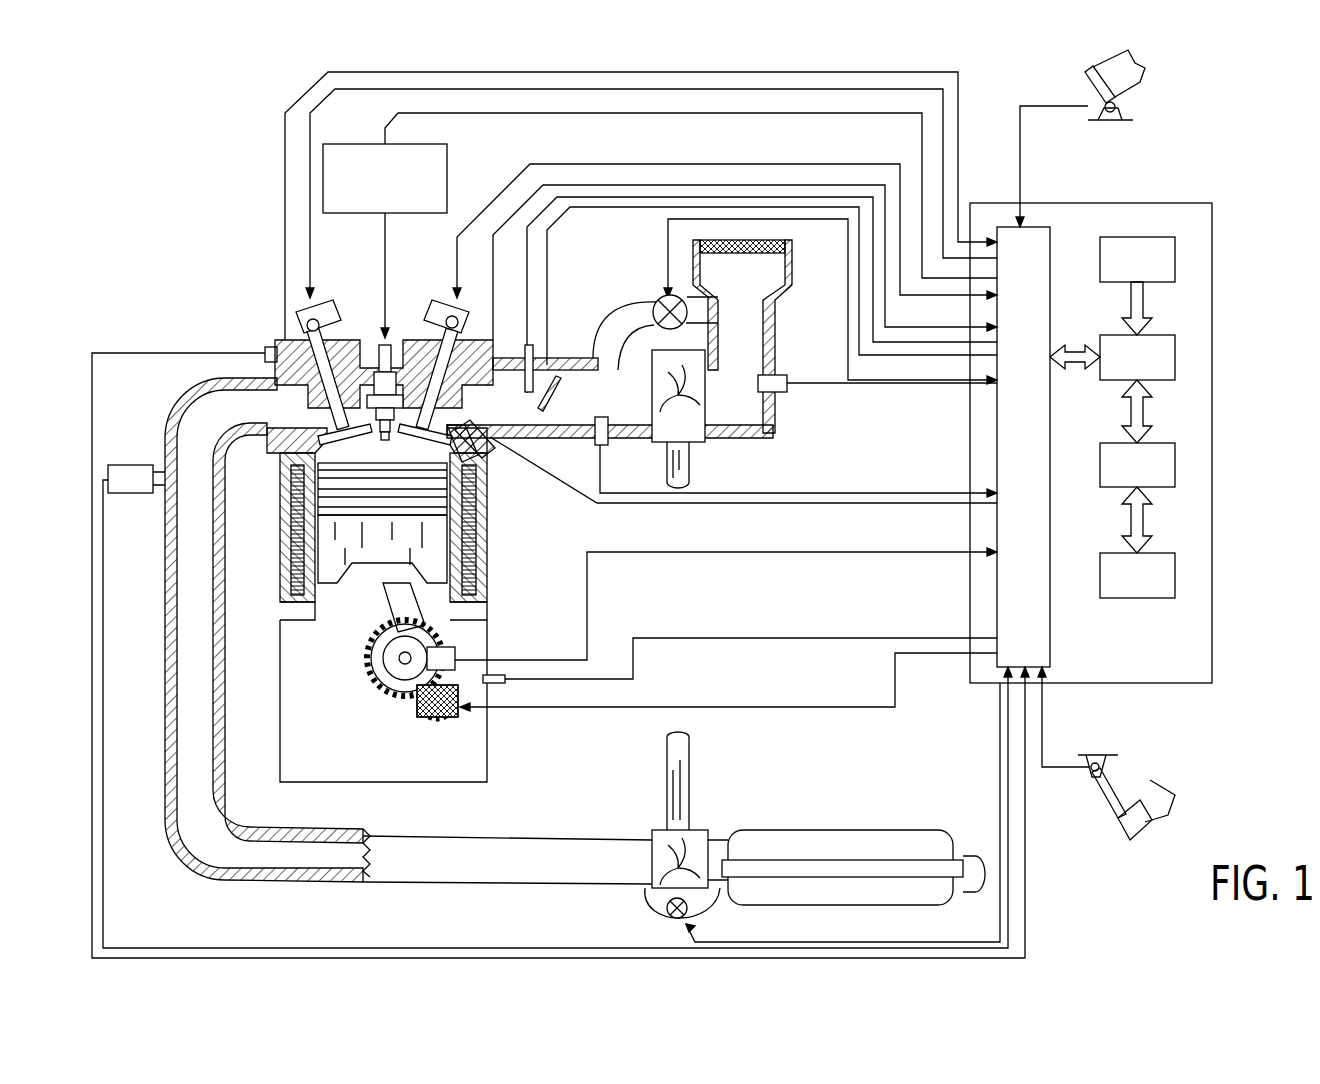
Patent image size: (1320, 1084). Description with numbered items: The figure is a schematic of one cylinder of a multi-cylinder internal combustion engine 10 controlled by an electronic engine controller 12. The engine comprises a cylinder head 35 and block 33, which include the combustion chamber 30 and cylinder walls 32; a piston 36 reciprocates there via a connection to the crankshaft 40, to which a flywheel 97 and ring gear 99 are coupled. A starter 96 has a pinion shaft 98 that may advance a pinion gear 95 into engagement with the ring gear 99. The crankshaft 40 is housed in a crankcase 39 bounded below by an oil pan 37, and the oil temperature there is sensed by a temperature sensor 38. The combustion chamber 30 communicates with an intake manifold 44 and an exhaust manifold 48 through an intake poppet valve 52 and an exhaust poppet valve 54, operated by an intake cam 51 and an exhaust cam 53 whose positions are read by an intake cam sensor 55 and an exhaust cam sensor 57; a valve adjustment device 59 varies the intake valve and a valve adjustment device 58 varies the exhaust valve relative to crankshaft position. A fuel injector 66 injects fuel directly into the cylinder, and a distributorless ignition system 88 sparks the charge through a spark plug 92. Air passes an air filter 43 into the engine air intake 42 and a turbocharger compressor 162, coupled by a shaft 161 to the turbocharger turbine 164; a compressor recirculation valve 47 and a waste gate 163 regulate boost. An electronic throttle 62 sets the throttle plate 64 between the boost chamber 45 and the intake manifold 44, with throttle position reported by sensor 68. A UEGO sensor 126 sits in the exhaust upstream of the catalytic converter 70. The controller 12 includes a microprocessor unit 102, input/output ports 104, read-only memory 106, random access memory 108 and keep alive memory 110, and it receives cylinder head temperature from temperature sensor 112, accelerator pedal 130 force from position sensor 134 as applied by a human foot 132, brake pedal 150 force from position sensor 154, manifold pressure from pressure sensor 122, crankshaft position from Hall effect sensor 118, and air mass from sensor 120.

The internal combustion engine 10 is at (213, 295).
The electronic engine controller 12 is at (1212, 200).
The combustion chamber 30 is at (382, 445).
The cylinder walls 32 is at (325, 595).
The block 33 is at (274, 494).
The cylinder head 35 is at (272, 338).
The piston 36 is at (365, 548).
The oil pan 37 is at (487, 762).
The temperature sensor 38 is at (498, 680).
The crankcase 39 is at (295, 703).
The crankshaft 40 is at (395, 685).
The engine air intake 42 is at (608, 266).
The air filter 43 is at (750, 258).
The intake manifold 44 is at (523, 407).
The boost chamber 45 is at (628, 412).
The compressor recirculation valve 47 is at (660, 300).
The exhaust manifold 48 is at (259, 417).
The intake cam 51 is at (440, 305).
The intake poppet valve 52 is at (435, 405).
The exhaust cam 53 is at (325, 308).
The exhaust poppet valve 54 is at (322, 414).
The intake cam sensor 55 is at (470, 341).
The exhaust cam sensor 57 is at (296, 316).
The valve adjustment device 58 is at (330, 342).
The valve adjustment device 59 is at (465, 320).
The electronic throttle 62 is at (553, 382).
The throttle plate 64 is at (542, 410).
The fuel injector 66 is at (500, 447).
The throttle position sensor 68 is at (515, 360).
The catalytic converter 70 is at (775, 832).
The distributorless ignition system 88 is at (340, 144).
The spark plug 92 is at (378, 345).
The pinion gear 95 is at (440, 722).
The starter 96 is at (447, 725).
The flywheel 97 is at (372, 663).
The pinion shaft 98 is at (440, 720).
The ring gear 99 is at (402, 698).
The microprocessor unit 102 is at (1175, 355).
The input/output ports 104 is at (1052, 232).
The read-only memory 106 is at (1175, 255).
The random access memory 108 is at (1175, 462).
The keep alive memory 110 is at (1175, 572).
The temperature sensor 112 is at (262, 350).
The Hall effect sensor 118 is at (460, 647).
The air mass sensor 120 is at (787, 380).
The pressure sensor 122 is at (600, 447).
The Universal Exhaust Gas Oxygen sensor 126 is at (130, 465).
The accelerator pedal 130 is at (1090, 82).
The human foot 132 is at (1130, 75).
The position sensor 134 is at (1140, 110).
The brake pedal 150 is at (1118, 820).
The position sensor 154 is at (1088, 757).
The shaft 161 is at (668, 470).
The turbocharger compressor 162 is at (680, 425).
The waste gate 163 is at (668, 918).
The turbocharger turbine 164 is at (652, 830).